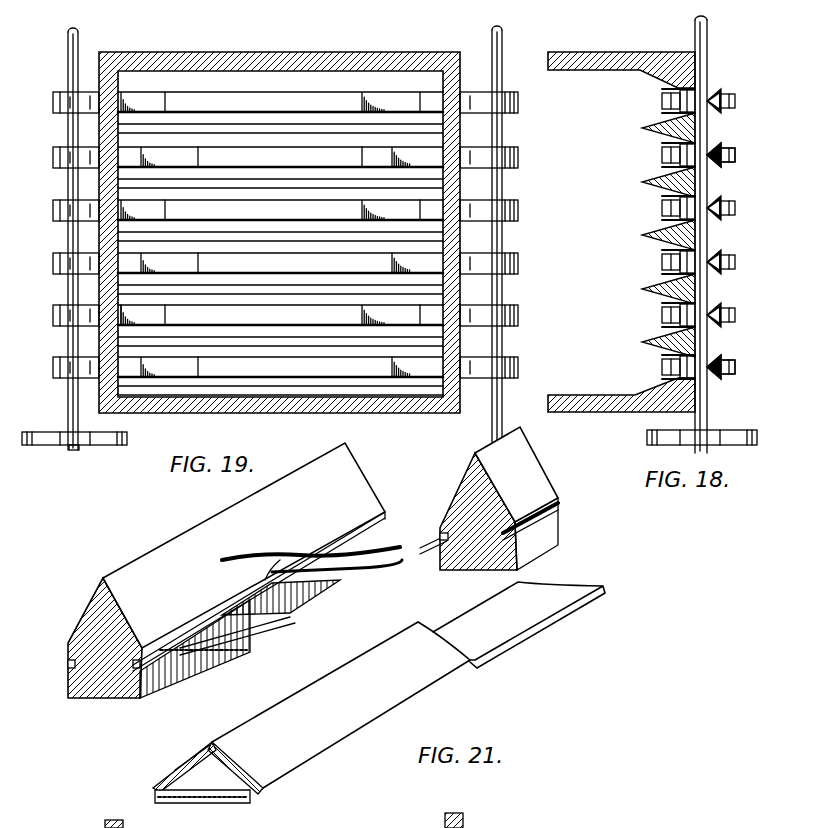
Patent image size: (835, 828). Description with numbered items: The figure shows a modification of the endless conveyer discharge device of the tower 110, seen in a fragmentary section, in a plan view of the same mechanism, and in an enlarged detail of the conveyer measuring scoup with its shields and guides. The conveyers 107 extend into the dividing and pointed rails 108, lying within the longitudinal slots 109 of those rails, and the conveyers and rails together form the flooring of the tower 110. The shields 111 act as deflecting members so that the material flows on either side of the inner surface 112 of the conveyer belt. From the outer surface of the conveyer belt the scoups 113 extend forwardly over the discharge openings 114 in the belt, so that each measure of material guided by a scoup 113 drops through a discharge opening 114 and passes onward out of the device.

In FIG. 19, the conveyer 107 is at (280, 98).
In FIG. 18, the conveyer 107 is at (678, 208).
In FIG. 21, the conveyer 107 is at (403, 527).
In FIG. 19, the dividing and pointed rail 108 is at (241, 190).
In FIG. 18, the dividing and pointed rail 108 is at (652, 134).
In FIG. 21, the dividing and pointed rail 108 is at (543, 453).
In FIG. 18, the longitudinal slot 109 is at (676, 111).
In FIG. 21, the longitudinal slot 109 is at (68, 663).
In FIG. 19, the tower 110 is at (152, 412).
In FIG. 21, the tower 110 is at (470, 820).
In FIG. 18, the shield 111 is at (718, 142).
In FIG. 21, the shield 111 is at (402, 697).
In FIG. 18, the inner surface of the conveyer belt 112 is at (718, 157).
In FIG. 21, the inner surface of the conveyer belt 112 is at (218, 778).
In FIG. 19, the scoup 113 is at (432, 157).
In FIG. 21, the scoup 113 is at (275, 562).
In FIG. 21, the discharge opening 114 is at (300, 593).